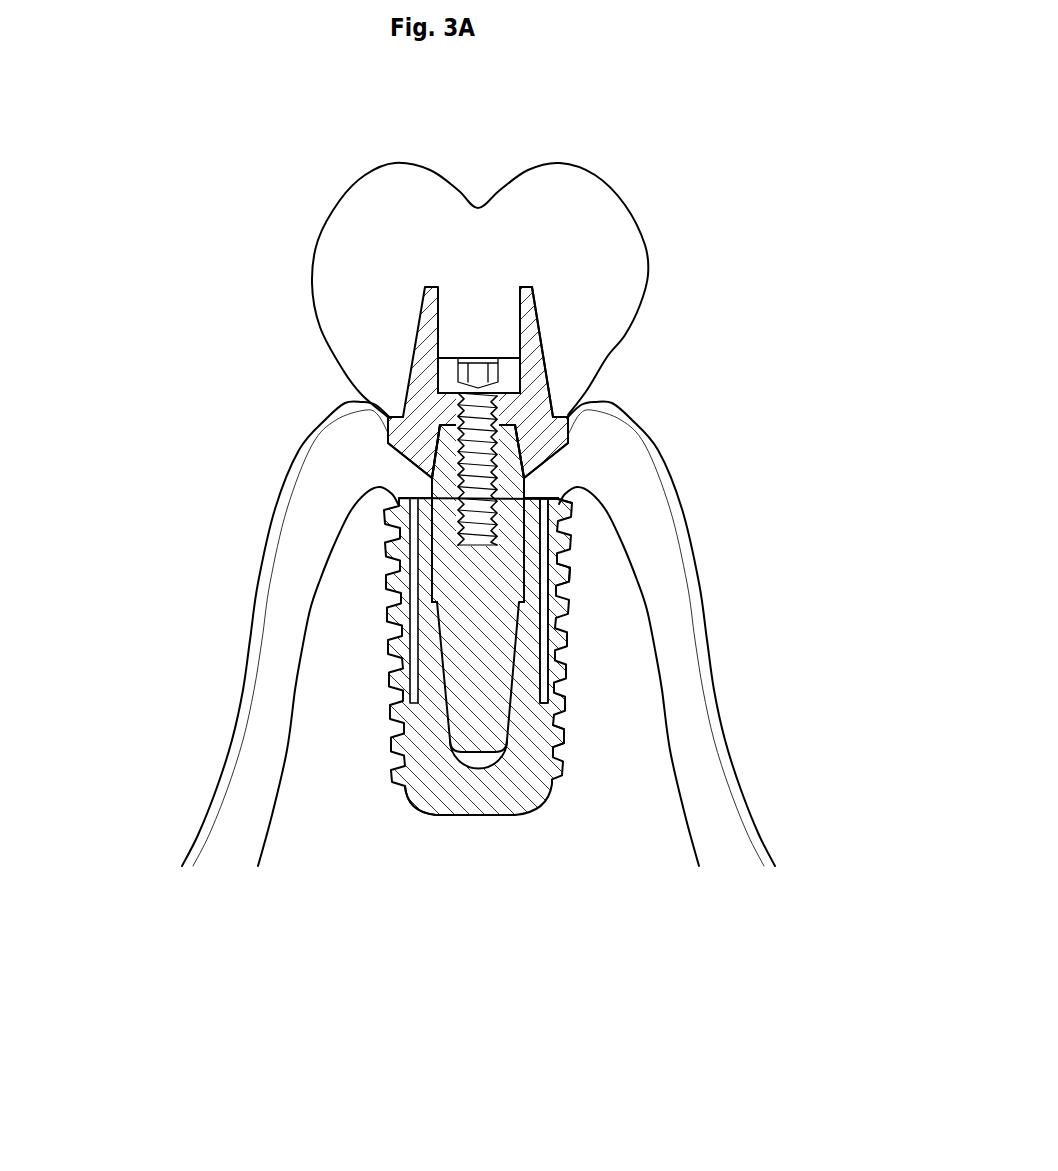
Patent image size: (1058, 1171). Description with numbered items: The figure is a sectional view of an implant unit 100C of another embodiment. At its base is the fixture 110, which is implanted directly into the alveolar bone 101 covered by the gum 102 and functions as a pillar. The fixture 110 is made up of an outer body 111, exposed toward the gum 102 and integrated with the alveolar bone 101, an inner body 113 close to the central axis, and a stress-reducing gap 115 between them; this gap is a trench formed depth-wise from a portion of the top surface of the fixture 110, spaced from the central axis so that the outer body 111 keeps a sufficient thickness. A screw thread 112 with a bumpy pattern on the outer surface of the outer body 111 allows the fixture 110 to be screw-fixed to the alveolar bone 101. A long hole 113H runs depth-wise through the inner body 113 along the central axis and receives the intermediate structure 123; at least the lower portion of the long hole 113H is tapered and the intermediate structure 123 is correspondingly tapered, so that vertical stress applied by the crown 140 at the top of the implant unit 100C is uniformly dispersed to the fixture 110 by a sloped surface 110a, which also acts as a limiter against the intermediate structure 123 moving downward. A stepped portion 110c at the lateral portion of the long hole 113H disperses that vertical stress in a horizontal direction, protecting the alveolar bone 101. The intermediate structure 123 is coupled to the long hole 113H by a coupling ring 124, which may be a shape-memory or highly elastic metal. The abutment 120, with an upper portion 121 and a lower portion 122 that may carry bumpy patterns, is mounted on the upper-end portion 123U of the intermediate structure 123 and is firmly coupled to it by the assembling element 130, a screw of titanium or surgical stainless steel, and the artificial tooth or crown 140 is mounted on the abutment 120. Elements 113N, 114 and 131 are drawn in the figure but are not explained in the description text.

The implant unit 100C is at (667, 205).
The alveolar bone 101 is at (618, 803).
The gum 102 is at (727, 822).
The fixture 110 is at (427, 812).
The sloped surface 110a is at (445, 706).
The stepped portion 110c is at (438, 601).
The outer body 111 is at (555, 590).
The screw thread 112 is at (562, 742).
The inner body 113 is at (432, 655).
The long hole 113H is at (483, 758).
The fixture slit neck 113N is at (521, 559).
The fastening screw 114 is at (497, 488).
The stress-reducing gap 115 is at (548, 548).
The abutment 120 is at (533, 387).
The upper portion 121 is at (530, 335).
The lower portion 122 is at (510, 452).
The intermediate structure 123 is at (493, 647).
The upper-end portion 123U is at (445, 446).
The coupling ring 124 is at (437, 558).
The assembling element 130 is at (448, 372).
The fixture top surface 131 is at (403, 498).
The crown 140 is at (342, 238).